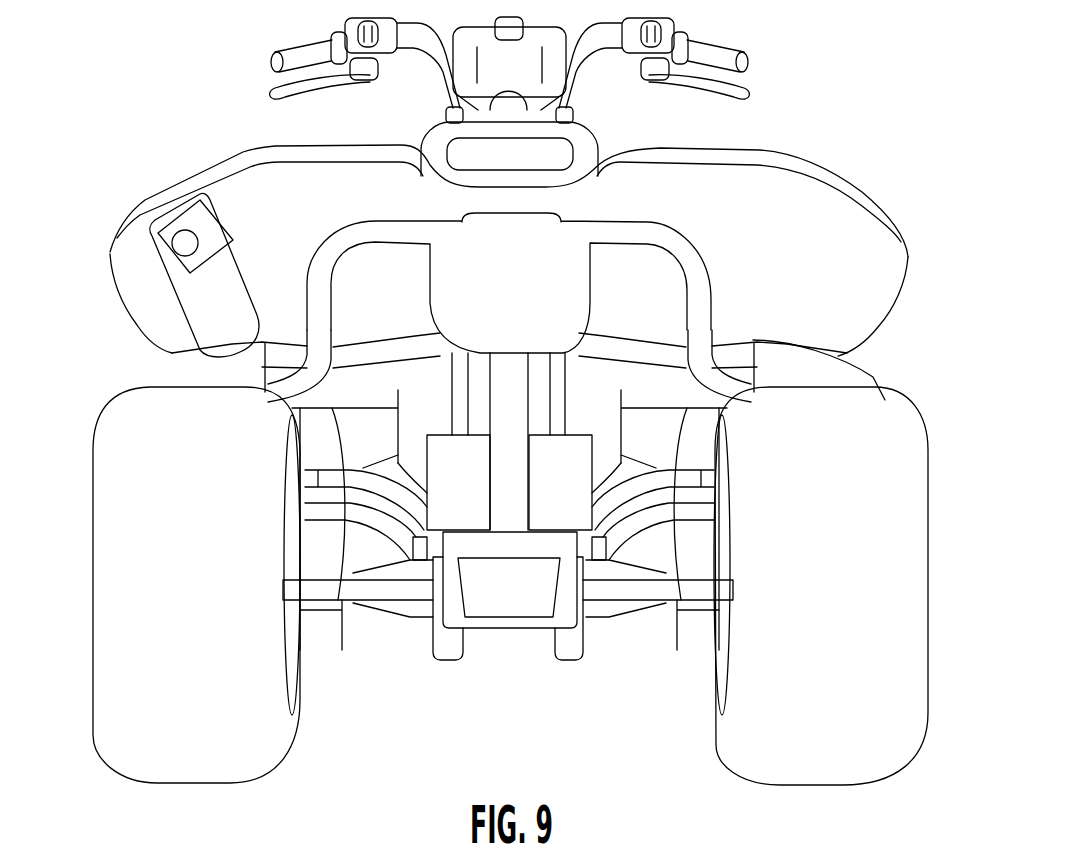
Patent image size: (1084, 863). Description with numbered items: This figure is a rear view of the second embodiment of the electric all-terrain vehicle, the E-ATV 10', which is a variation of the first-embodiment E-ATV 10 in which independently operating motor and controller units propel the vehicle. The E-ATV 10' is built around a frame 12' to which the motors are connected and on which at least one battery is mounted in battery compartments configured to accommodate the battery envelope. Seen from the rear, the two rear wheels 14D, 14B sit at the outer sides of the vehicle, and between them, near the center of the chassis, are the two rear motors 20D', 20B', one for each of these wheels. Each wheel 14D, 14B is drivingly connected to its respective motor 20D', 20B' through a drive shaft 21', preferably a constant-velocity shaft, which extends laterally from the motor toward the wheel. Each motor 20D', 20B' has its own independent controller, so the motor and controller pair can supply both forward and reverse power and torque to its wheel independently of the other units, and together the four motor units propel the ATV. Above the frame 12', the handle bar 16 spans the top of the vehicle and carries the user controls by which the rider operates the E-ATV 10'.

The E-ATV 10 is at (542, 515).
The E-ATV 10' is at (509, 229).
The frame 12' is at (509, 353).
The wheel 14B is at (903, 450).
The wheel 14D is at (102, 470).
The handle bar 16 is at (705, 52).
The motor 20B' is at (673, 469).
The motor 20D' is at (332, 478).
The drive shaft 21' is at (508, 678).